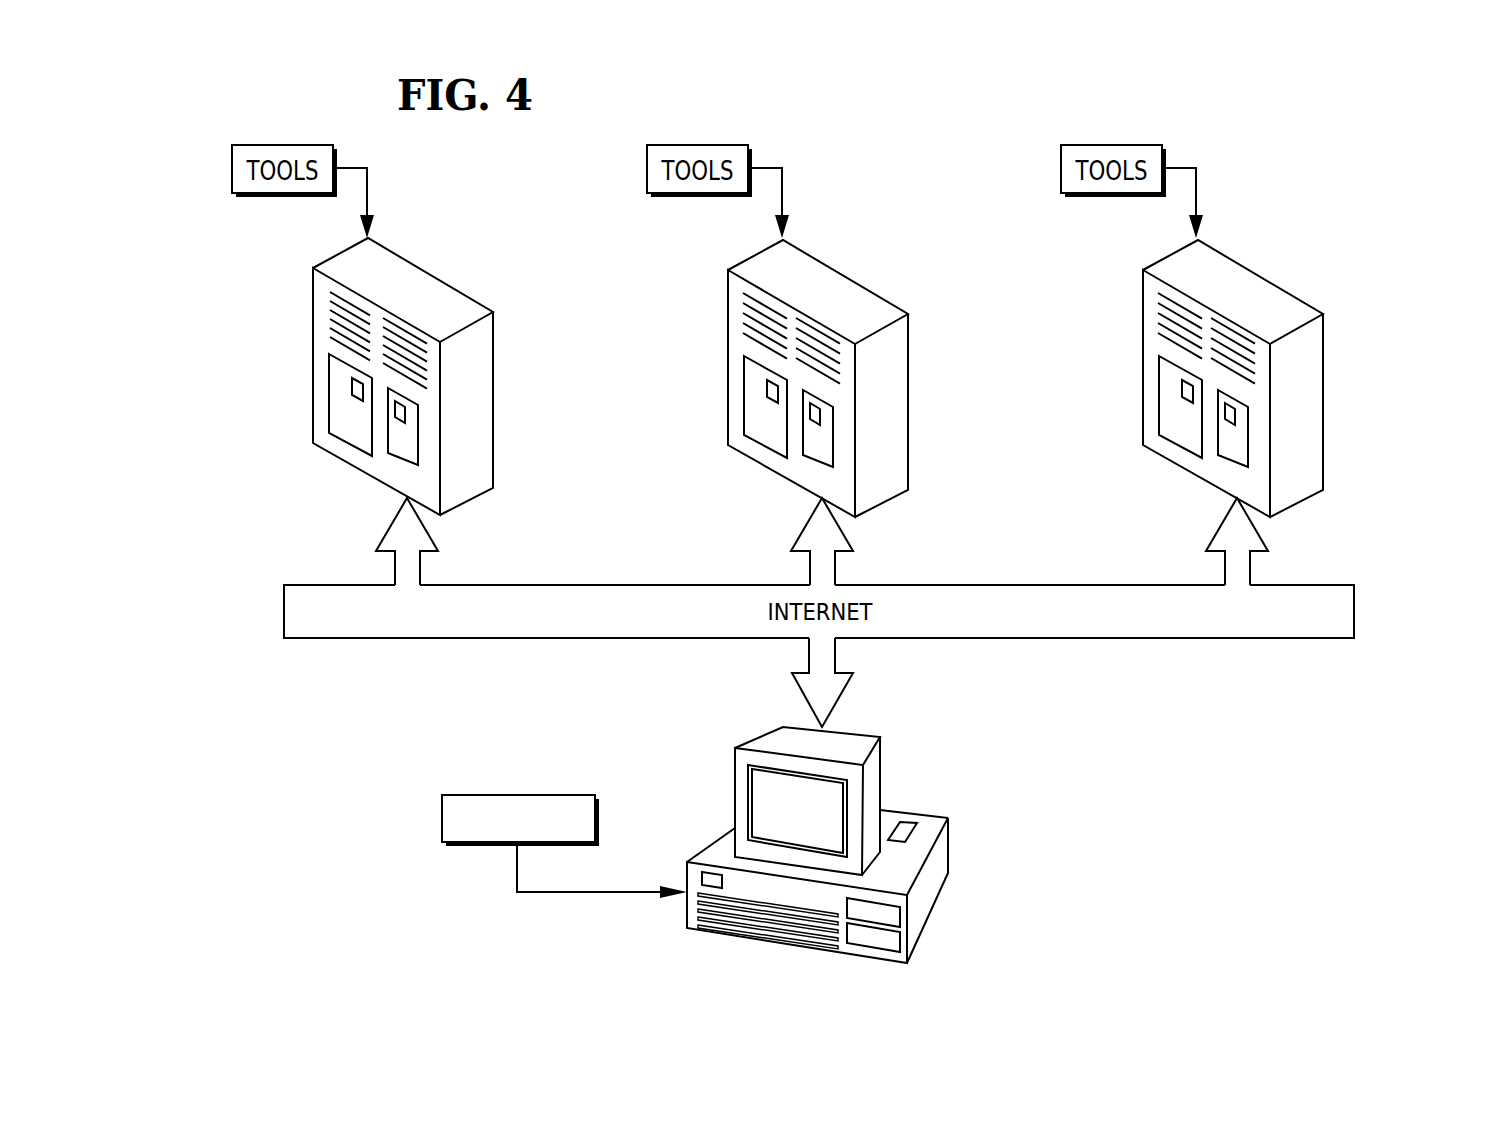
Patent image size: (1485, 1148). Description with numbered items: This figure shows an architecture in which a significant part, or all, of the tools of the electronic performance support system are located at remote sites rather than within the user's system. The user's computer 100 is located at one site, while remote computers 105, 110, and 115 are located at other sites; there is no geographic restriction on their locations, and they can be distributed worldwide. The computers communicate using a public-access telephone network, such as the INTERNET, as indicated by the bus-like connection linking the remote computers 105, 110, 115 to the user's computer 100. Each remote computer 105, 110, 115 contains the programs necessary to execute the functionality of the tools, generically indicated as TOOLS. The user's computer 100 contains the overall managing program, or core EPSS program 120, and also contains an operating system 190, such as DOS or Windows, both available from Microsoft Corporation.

The user's computer 100 is at (861, 845).
The remote computer 105 is at (493, 363).
The remote computer 110 is at (908, 380).
The remote computer 115 is at (1322, 380).
The core EPSS program 120 is at (465, 795).
The operating system 190 is at (913, 822).